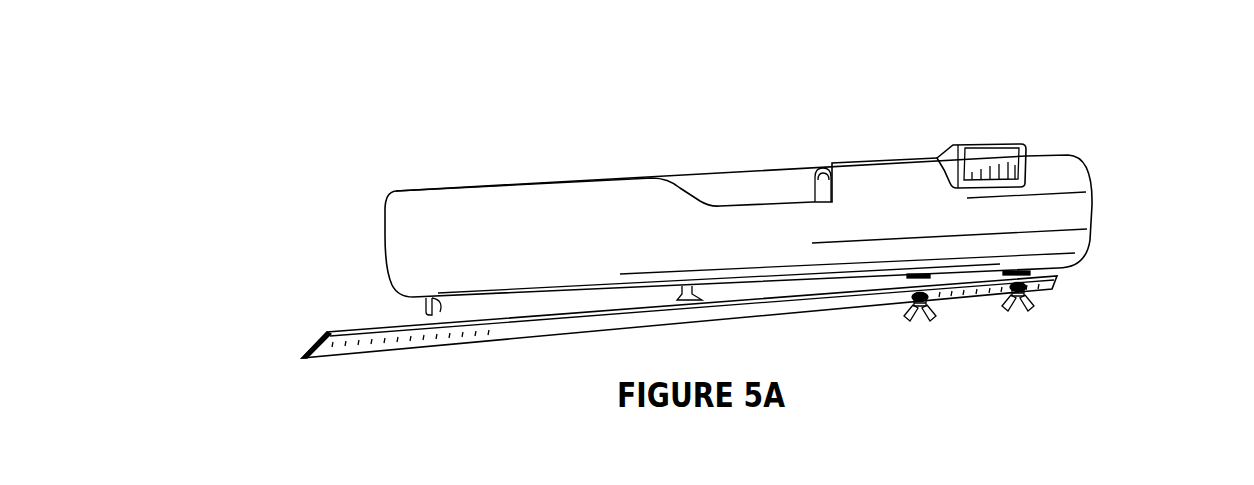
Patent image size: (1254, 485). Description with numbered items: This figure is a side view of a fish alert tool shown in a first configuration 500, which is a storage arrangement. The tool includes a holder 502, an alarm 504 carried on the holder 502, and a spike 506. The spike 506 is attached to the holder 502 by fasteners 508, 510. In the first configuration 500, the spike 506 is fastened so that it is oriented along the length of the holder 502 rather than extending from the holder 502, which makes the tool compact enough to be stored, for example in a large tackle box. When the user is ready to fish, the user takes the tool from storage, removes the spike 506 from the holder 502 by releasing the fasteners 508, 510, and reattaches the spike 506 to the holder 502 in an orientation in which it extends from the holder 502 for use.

The first configuration 500 is at (1152, 77).
The holder 502 is at (620, 168).
The alarm 504 is at (977, 137).
The spike 506 is at (368, 365).
The fastener 508 is at (920, 318).
The fastener 510 is at (1028, 313).